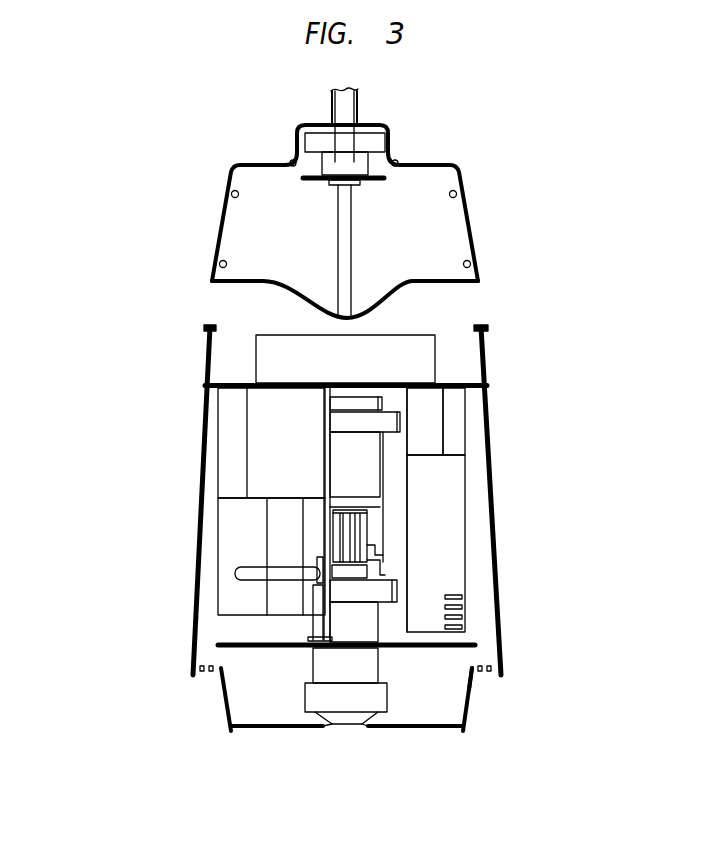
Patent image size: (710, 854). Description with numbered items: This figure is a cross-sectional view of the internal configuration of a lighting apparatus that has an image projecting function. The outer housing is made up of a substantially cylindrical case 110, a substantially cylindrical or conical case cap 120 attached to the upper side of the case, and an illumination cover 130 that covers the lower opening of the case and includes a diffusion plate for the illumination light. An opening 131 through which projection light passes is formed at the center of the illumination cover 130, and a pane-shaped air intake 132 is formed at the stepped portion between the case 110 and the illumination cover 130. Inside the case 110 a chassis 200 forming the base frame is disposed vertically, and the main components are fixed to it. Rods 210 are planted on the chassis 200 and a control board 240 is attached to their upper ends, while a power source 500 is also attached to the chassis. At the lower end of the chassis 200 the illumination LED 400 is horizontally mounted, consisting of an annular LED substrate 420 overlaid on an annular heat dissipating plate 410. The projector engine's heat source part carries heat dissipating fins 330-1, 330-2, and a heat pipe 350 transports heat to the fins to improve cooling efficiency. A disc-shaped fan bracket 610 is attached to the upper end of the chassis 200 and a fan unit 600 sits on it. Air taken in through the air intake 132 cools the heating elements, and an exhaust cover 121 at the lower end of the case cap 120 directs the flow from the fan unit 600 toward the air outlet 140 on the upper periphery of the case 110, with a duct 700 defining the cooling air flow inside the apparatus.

The case 110 is at (503, 617).
The case cap 120 is at (465, 220).
The exhaust cover 121 is at (245, 272).
The illumination cover 130 is at (277, 724).
The opening 131 is at (333, 726).
The air intake 132 is at (482, 672).
The air outlet 140 is at (217, 305).
The chassis 200 is at (323, 455).
The rods 210 is at (353, 423).
The control board 240 is at (383, 475).
The heat dissipating fin 330-1 is at (230, 535).
The heat dissipating fin 330-2 is at (359, 537).
The heat pipe 350 is at (237, 573).
The illumination LED 400 is at (472, 647).
The heat dissipating plate 410 is at (243, 642).
The LED substrate 420 is at (200, 668).
The power source 500 is at (450, 517).
The fan unit 600 is at (328, 370).
The fan bracket 610 is at (457, 382).
The duct 700 is at (232, 457).